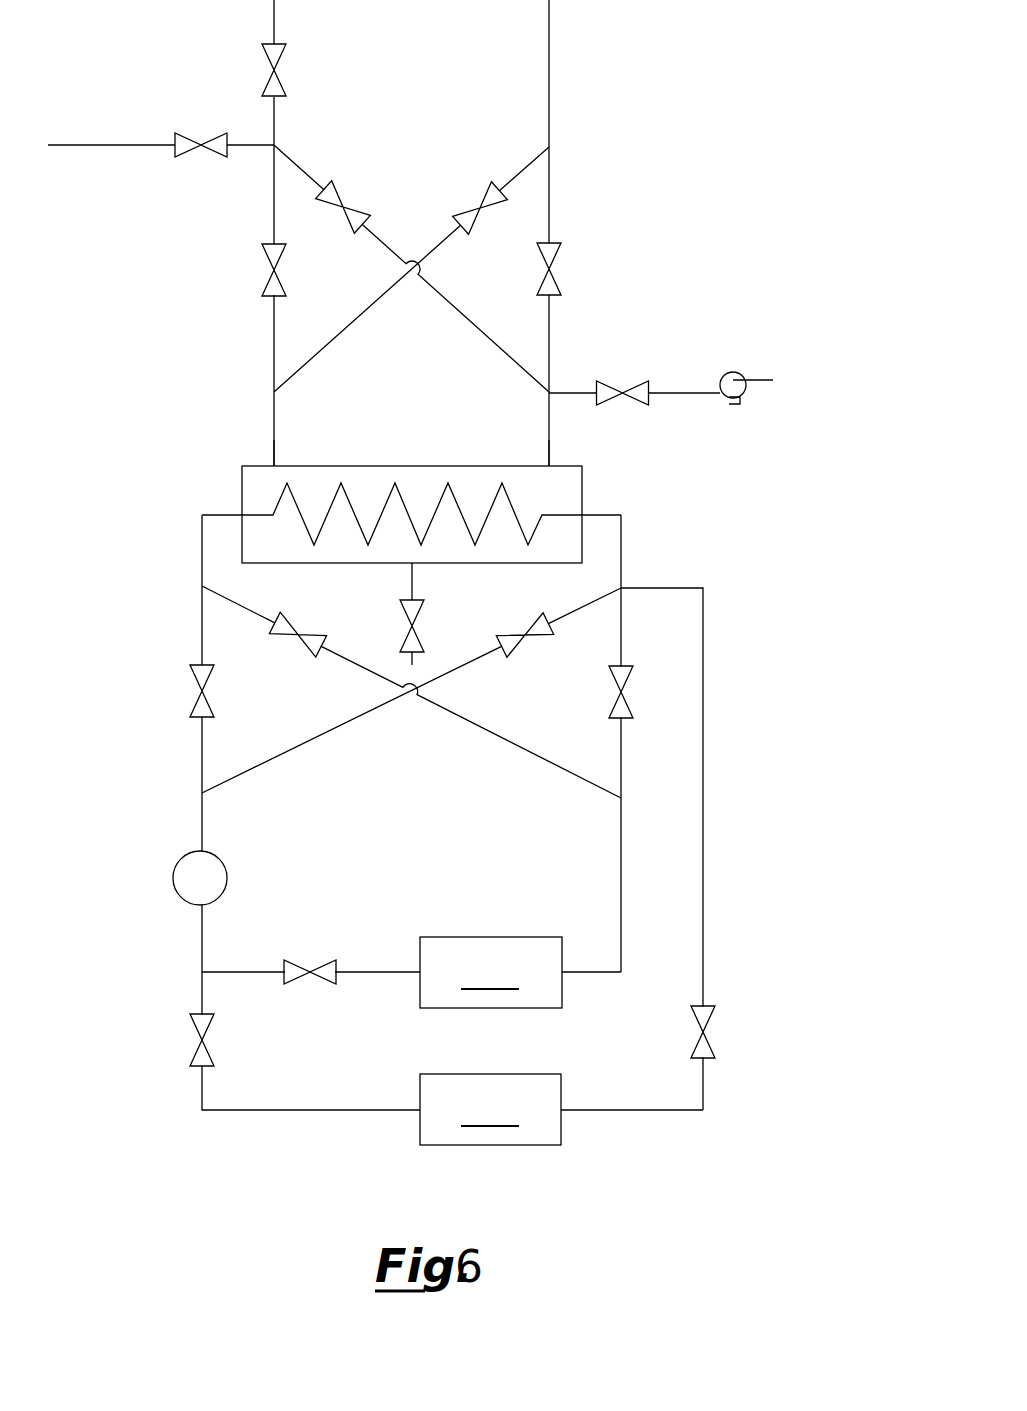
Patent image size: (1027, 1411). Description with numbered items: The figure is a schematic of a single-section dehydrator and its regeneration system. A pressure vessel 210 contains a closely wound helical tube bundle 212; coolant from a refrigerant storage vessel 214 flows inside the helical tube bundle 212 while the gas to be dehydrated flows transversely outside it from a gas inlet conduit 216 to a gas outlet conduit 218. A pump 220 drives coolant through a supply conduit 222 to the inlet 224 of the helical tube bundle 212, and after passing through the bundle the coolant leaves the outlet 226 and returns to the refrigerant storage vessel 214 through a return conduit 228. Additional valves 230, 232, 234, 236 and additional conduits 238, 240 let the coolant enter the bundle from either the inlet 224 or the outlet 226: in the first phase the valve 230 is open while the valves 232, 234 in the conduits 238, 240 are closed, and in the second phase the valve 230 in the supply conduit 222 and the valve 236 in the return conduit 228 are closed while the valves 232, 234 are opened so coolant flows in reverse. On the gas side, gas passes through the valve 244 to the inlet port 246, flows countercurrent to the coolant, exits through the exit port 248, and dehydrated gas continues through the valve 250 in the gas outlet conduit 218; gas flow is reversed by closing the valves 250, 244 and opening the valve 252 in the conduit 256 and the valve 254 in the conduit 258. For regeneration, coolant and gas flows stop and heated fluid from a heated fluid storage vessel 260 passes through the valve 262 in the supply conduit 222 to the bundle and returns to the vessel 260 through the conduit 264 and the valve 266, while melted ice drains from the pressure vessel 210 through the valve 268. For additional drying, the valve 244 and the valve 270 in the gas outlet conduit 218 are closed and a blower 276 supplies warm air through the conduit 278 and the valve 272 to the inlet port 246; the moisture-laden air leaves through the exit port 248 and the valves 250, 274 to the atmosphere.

The pressure vessel 210 is at (585, 472).
The helical tube bundle 212 is at (408, 485).
The refrigerant storage vessel 214 is at (520, 972).
The gas inlet conduit 216 is at (552, 60).
The gas outlet conduit 218 is at (271, 20).
The pump 220 is at (183, 877).
The supply conduit 222 is at (198, 809).
The inlet 224 is at (240, 512).
The outlet 226 is at (585, 513).
The return conduit 228 is at (618, 852).
The valve 230 is at (210, 705).
The valve 232 is at (306, 627).
The valve 234 is at (532, 626).
The valve 236 is at (613, 711).
The conduit 238 is at (335, 655).
The conduit 240 is at (313, 746).
The valve 244 is at (557, 283).
The inlet port 246 is at (555, 462).
The exit port 248 is at (270, 462).
The valve 250 is at (263, 268).
The valve 252 is at (350, 197).
The valve 254 is at (466, 200).
The conduit 256 is at (470, 338).
The conduit 258 is at (330, 352).
The heated fluid storage vessel 260 is at (561, 1109).
The valve 262 is at (208, 1041).
The conduit 264 is at (706, 810).
The valve 266 is at (694, 1038).
The valve 268 is at (424, 613).
The valve 270 is at (282, 78).
The valve 272 is at (610, 385).
The valve 274 is at (190, 140).
The blower 276 is at (740, 400).
The conduit 278 is at (676, 392).